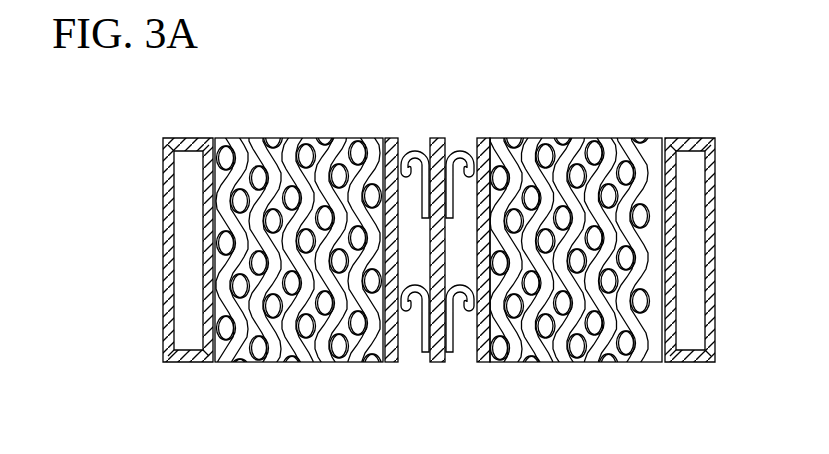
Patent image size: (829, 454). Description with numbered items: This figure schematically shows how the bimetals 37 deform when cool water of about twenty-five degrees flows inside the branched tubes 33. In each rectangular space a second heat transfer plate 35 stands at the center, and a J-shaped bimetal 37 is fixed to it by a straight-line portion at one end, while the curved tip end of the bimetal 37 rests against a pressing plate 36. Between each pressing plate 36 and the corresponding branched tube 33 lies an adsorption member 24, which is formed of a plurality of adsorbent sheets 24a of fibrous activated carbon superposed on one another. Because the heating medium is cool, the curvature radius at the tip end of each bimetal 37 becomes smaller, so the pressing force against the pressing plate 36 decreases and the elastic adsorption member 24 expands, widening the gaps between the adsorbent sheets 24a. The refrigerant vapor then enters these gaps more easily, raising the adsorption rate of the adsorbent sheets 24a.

The adsorption member 24 is at (438, 236).
The adsorbent sheet 24a is at (277, 145).
The branched tube 33 is at (183, 364).
The second heat transfer plate 35 is at (437, 364).
The pressing plate 36 is at (391, 364).
The bimetal 37 is at (410, 150).